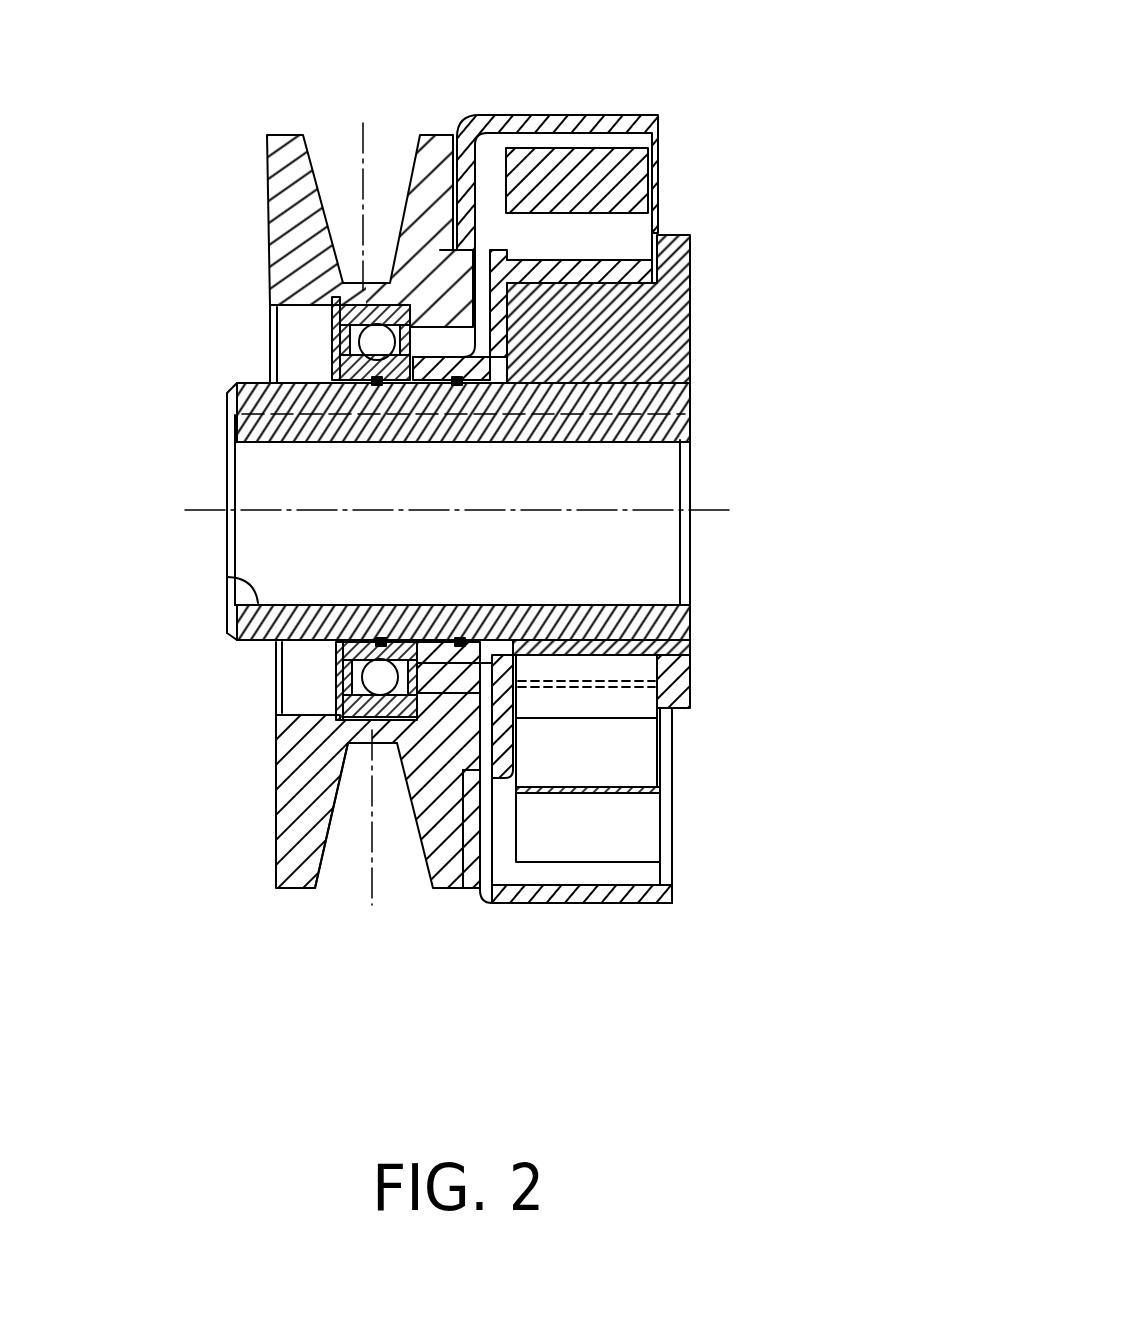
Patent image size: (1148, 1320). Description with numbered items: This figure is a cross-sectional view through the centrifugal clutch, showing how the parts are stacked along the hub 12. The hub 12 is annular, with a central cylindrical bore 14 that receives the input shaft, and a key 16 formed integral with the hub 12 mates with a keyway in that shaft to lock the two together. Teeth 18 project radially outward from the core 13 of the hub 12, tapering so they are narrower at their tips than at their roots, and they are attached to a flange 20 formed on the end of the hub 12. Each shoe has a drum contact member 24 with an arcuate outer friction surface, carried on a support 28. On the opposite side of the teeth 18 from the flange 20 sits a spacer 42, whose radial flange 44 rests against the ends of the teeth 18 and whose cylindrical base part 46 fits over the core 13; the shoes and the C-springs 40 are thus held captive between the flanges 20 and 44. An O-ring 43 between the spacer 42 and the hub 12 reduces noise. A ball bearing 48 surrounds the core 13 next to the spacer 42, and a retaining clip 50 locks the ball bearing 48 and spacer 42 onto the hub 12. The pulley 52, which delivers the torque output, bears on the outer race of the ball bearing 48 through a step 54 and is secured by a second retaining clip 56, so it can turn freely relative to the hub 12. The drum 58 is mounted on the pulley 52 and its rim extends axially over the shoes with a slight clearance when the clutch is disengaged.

The hub 12 is at (277, 543).
The core 13 is at (237, 622).
The bore 14 is at (228, 577).
The key 16 is at (240, 430).
The teeth 18 is at (607, 355).
The flange 20 is at (690, 682).
The drum contact member 24 is at (590, 180).
The support 28 is at (603, 275).
The C-springs 40 is at (603, 792).
The spacer 42 is at (493, 651).
The O-ring 43 is at (447, 355).
The radial flange 44 is at (510, 677).
The cylindrical base part 46 is at (455, 655).
The ball bearing 48 is at (350, 740).
The retaining clip 50 is at (333, 645).
The pulley 52 is at (300, 803).
The step 54 is at (398, 745).
The retaining clip 56 is at (330, 316).
The drum 58 is at (540, 117).